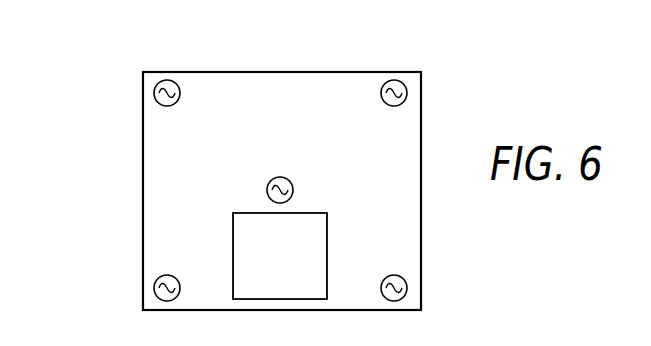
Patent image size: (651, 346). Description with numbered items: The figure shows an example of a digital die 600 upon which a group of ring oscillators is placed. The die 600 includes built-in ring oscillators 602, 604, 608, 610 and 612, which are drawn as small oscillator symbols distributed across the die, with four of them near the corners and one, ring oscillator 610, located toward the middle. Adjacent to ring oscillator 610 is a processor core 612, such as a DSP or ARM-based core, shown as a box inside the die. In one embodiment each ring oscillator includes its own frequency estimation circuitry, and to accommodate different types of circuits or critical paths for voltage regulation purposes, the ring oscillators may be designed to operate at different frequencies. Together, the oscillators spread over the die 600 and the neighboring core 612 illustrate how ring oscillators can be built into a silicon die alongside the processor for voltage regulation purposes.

The digital die 600 is at (118, 157).
The ring oscillator 602 is at (159, 83).
The ring oscillator 604 is at (401, 83).
The ring oscillator 608 is at (403, 278).
The ring oscillator 610 is at (272, 181).
The processor core 612 is at (316, 213).